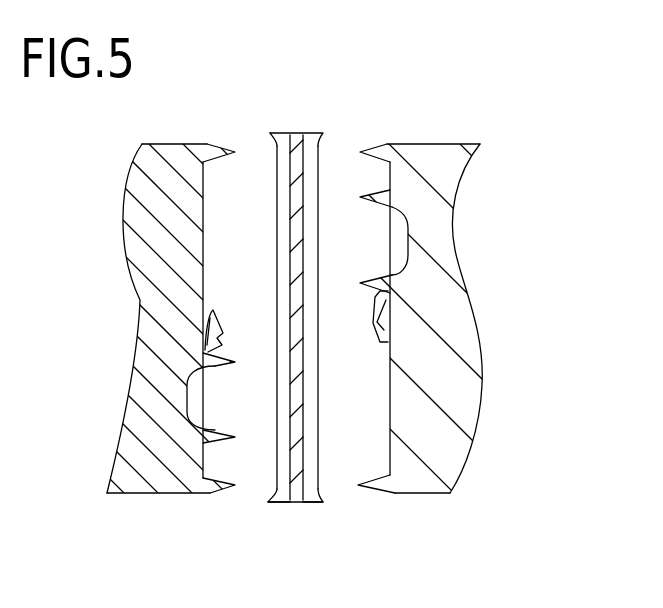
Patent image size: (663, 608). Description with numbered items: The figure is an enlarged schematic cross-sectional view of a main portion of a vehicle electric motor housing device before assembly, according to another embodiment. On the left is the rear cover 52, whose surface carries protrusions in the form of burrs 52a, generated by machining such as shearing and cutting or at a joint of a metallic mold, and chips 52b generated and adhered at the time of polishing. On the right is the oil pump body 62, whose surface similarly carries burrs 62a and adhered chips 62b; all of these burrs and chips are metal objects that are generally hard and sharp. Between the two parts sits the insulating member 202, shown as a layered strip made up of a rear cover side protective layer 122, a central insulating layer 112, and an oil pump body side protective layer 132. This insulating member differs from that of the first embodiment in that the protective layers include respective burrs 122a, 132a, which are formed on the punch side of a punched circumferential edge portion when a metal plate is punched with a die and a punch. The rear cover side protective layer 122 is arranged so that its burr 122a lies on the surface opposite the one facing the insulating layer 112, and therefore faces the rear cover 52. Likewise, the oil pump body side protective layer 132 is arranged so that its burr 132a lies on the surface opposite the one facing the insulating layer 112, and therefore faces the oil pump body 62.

The insulating member 202 is at (298, 291).
The insulating layer 112 is at (297, 150).
The rear cover side protective layer 122 is at (283, 147).
The oil pump body side protective layer 132 is at (310, 147).
The burr 122a is at (271, 507).
The burr 132a is at (322, 507).
The rear cover 52 is at (167, 387).
The burrs 52a is at (220, 137).
The chips 52b is at (210, 330).
The oil pump body 62 is at (440, 278).
The burrs 62a is at (373, 138).
The chips 62b is at (375, 322).